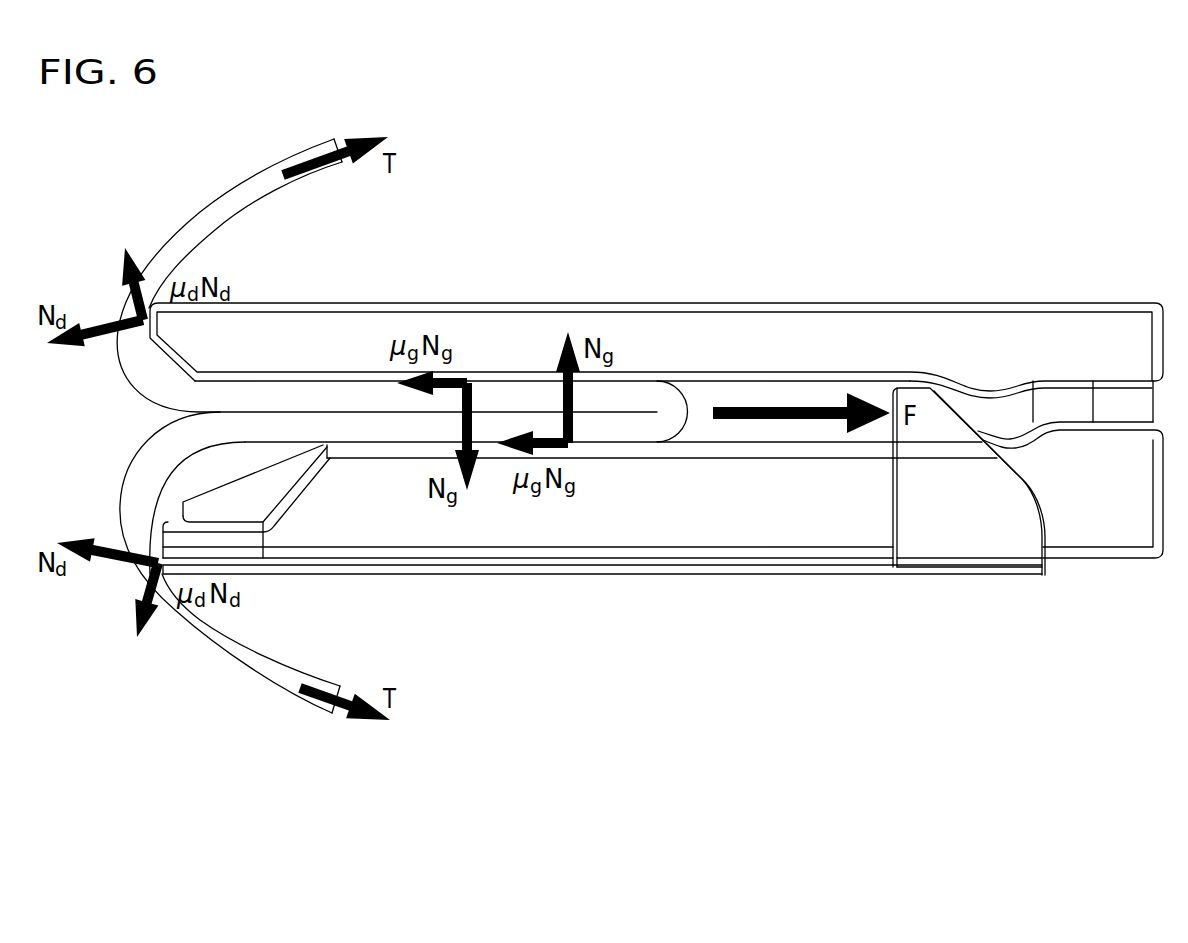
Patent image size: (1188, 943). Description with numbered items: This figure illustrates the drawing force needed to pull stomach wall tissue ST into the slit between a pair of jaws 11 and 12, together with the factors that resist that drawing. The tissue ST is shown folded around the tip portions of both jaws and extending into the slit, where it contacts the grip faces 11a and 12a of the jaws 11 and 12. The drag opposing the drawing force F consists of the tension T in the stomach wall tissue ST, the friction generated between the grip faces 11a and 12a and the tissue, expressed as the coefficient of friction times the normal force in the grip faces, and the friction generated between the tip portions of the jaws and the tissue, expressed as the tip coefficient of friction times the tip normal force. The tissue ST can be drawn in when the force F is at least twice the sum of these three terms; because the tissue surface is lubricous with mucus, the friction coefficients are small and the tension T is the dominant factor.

The jaw 11 is at (696, 530).
The grip face 11a is at (613, 432).
The jaw 12 is at (775, 318).
The grip face 12a is at (643, 386).
The stomach wall tissue ST is at (233, 192).